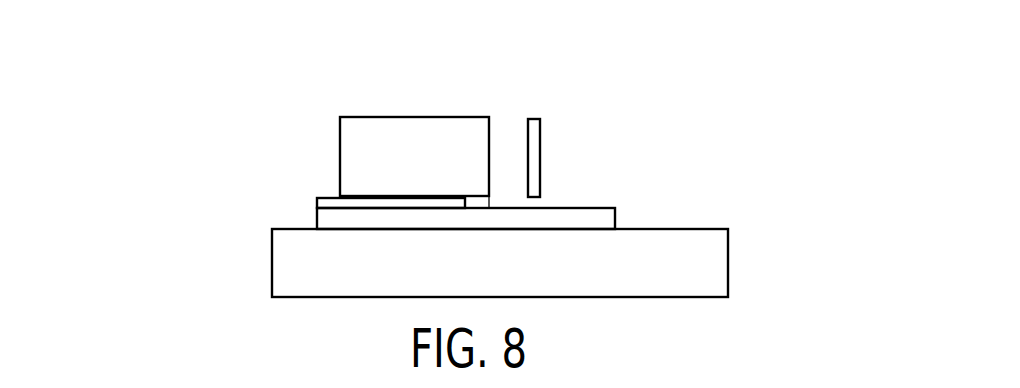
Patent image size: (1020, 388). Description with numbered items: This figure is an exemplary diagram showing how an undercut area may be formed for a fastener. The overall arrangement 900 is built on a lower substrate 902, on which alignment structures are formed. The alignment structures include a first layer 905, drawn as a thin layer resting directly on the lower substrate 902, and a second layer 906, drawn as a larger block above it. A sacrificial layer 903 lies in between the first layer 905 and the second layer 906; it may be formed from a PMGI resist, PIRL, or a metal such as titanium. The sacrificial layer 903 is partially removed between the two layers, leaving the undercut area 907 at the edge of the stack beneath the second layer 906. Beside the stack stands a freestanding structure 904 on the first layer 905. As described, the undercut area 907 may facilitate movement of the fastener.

The structure 900 is at (500, 114).
The lower substrate 902 is at (270, 263).
The sacrificial layer 903 is at (317, 200).
The freestanding structure 904 is at (540, 133).
The first layer 905 is at (615, 218).
The second layer 906 is at (415, 117).
The undercut area 907 is at (487, 200).